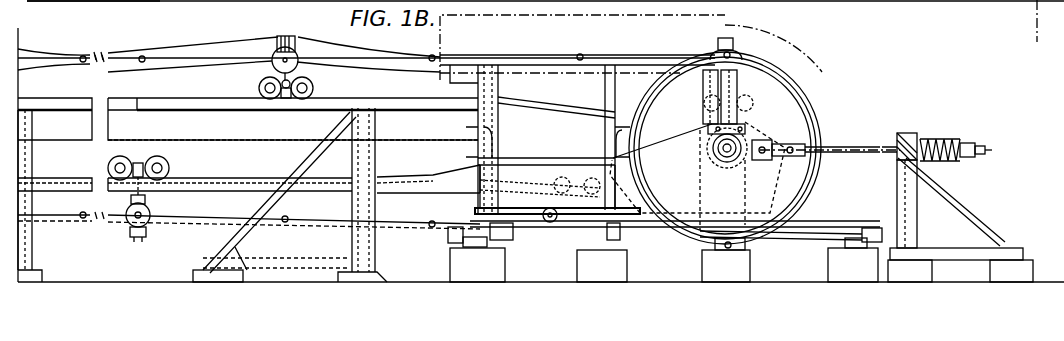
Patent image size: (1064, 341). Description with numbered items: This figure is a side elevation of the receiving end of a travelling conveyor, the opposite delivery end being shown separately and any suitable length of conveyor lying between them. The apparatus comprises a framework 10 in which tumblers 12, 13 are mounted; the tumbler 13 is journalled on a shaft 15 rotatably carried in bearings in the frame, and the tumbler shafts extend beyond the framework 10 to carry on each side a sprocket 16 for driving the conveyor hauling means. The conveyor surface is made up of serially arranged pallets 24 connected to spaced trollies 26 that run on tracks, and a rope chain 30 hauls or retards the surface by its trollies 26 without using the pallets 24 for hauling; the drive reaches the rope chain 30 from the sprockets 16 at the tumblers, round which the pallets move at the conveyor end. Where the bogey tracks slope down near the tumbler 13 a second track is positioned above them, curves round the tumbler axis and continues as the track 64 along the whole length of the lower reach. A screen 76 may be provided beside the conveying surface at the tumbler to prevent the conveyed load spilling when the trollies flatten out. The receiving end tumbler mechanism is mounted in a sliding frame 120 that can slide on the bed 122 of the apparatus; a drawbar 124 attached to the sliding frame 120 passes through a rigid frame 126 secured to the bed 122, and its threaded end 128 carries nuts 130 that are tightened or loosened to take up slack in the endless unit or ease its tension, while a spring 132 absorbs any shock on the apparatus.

The framework 10 is at (205, 125).
The tumbler 12 is at (184, 0).
The tumbler 13 is at (685, 98).
The shaft 15 is at (712, 157).
The sprocket 16 is at (814, 141).
The pallet 24 is at (325, 40).
The trolley 26 is at (292, 75).
The rope chain 30 is at (533, 56).
The lower reach track 64 is at (418, 182).
The screen 76 is at (717, 27).
The sliding frame 120 is at (747, 188).
The bed 122 is at (828, 237).
The drawbar 124 is at (868, 145).
The rigid frame 126 is at (908, 223).
The threaded end 128 is at (982, 152).
The nuts 130 is at (960, 146).
The spring 132 is at (955, 162).